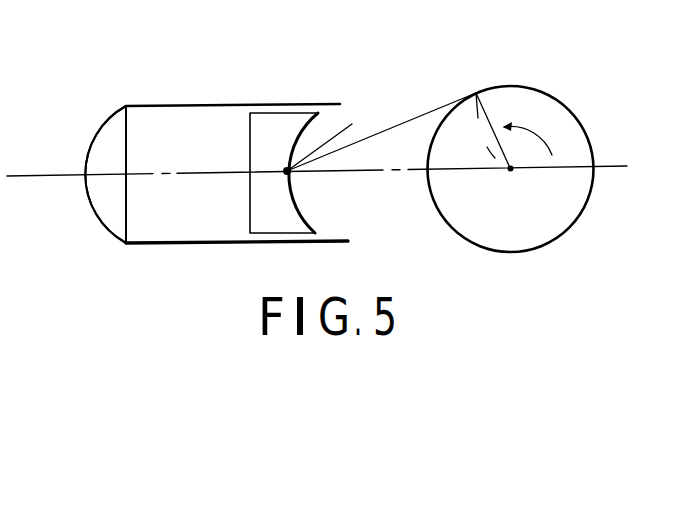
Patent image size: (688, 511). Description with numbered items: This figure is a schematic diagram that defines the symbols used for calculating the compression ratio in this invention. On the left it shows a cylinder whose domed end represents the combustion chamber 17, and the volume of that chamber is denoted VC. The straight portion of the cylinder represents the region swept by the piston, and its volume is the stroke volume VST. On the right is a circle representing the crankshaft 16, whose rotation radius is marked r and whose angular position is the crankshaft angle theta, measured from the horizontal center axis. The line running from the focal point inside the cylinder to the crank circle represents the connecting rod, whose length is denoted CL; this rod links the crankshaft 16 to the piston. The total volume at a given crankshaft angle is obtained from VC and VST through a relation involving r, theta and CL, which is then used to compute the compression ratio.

The crankshaft 16 is at (514, 85).
The combustion chamber 17 is at (112, 148).
The stroke volume of the piston VST is at (213, 113).
The volume of the combustion chamber VC is at (106, 214).
The length of the connecting rod CL is at (476, 93).